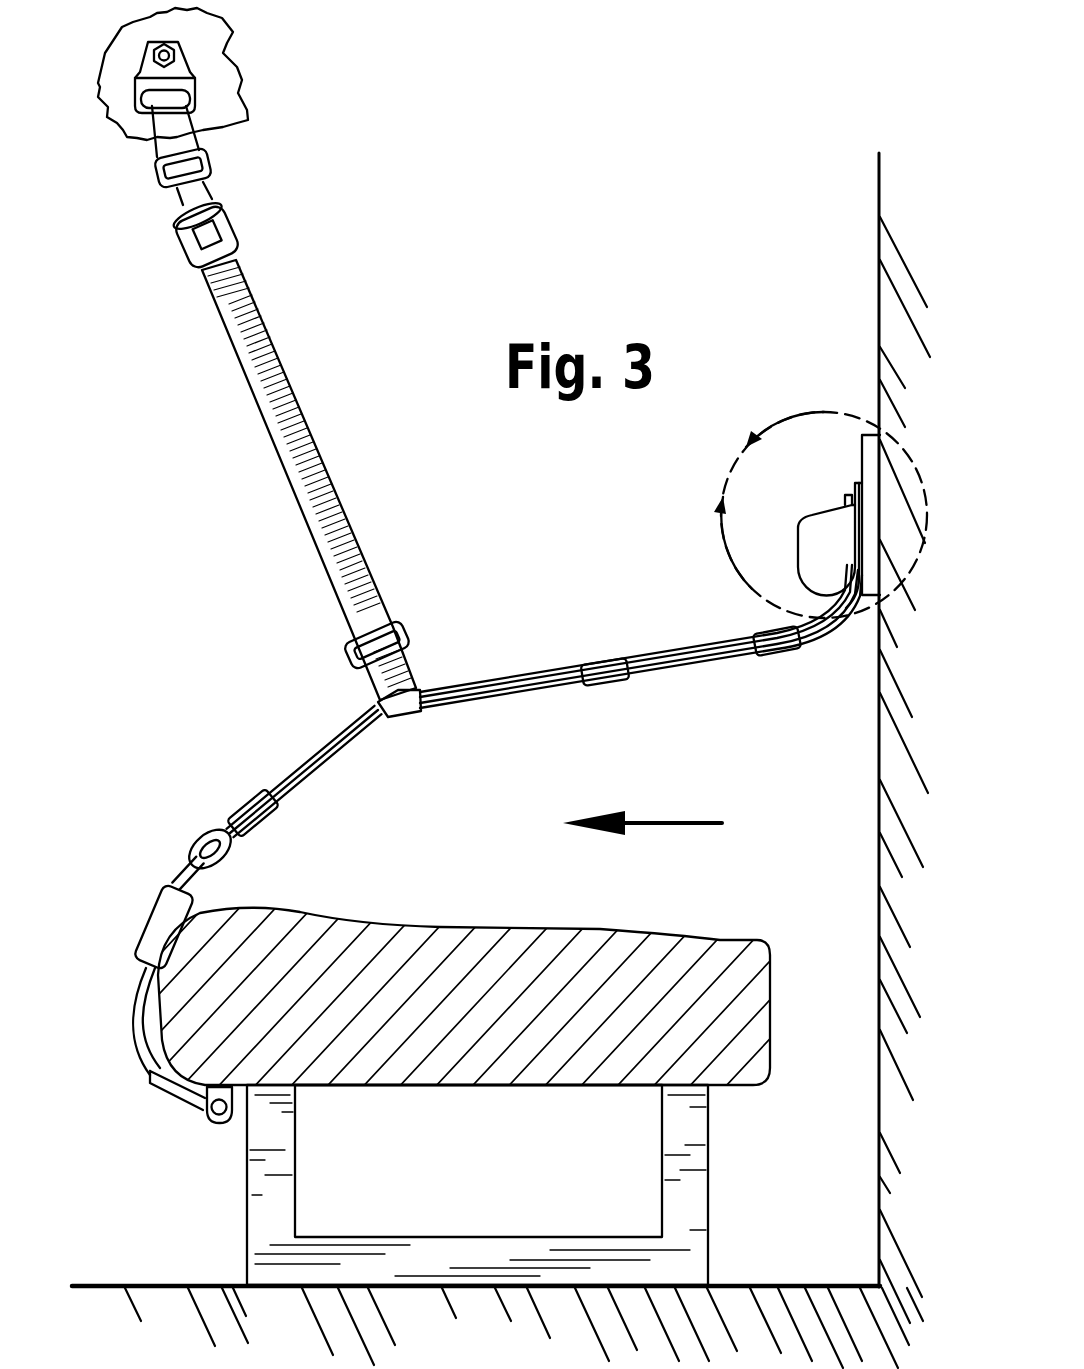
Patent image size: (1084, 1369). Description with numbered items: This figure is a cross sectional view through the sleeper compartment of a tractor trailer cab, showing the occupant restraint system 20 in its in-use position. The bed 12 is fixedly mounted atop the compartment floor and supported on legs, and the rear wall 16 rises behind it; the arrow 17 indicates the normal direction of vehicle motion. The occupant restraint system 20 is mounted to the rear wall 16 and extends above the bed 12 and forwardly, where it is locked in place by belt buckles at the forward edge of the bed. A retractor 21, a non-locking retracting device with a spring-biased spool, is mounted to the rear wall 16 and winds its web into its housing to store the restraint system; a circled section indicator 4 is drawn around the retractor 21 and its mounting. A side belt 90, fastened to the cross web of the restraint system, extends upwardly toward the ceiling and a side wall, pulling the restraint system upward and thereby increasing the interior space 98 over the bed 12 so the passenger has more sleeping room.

The bed 12 is at (350, 1045).
The rear wall 16 is at (893, 315).
The arrow 17 is at (673, 828).
The occupant restraint system 20 is at (507, 560).
The retractor 21 is at (810, 552).
The section view indicator 4 is at (820, 515).
The side belt 90 is at (270, 365).
The interior space 98 is at (353, 825).